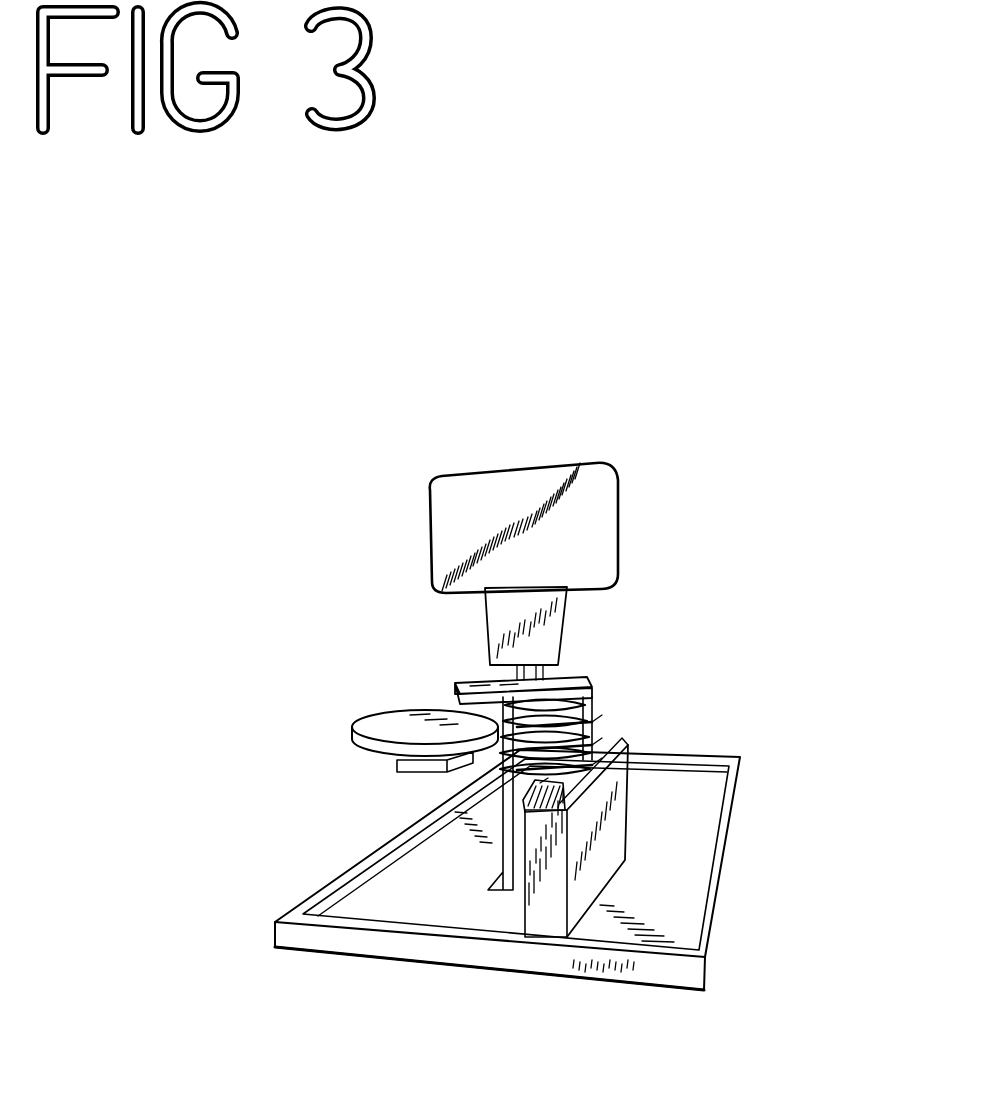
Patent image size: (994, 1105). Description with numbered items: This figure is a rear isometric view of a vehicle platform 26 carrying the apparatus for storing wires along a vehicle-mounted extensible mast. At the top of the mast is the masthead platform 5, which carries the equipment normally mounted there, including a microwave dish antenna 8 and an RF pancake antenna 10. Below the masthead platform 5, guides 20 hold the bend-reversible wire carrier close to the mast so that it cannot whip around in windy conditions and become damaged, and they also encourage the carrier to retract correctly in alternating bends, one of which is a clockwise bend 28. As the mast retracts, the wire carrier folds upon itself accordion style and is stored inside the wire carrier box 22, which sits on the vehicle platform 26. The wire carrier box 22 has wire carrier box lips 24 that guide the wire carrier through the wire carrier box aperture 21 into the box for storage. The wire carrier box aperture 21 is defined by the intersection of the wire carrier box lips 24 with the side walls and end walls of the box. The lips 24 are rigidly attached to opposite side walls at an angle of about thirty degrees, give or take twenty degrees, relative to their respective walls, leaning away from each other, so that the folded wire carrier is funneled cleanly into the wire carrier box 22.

The microwave dish antenna 8 is at (522, 462).
The masthead platform 5 is at (573, 680).
The guide 20 is at (598, 748).
The vehicle platform 26 is at (710, 755).
The wire carrier box lip 24 is at (540, 783).
The wire carrier box 22 is at (602, 873).
The RF pancake antenna 10 is at (352, 737).
The wire carrier box aperture 21 is at (525, 812).
The clockwise bend 28 is at (552, 812).